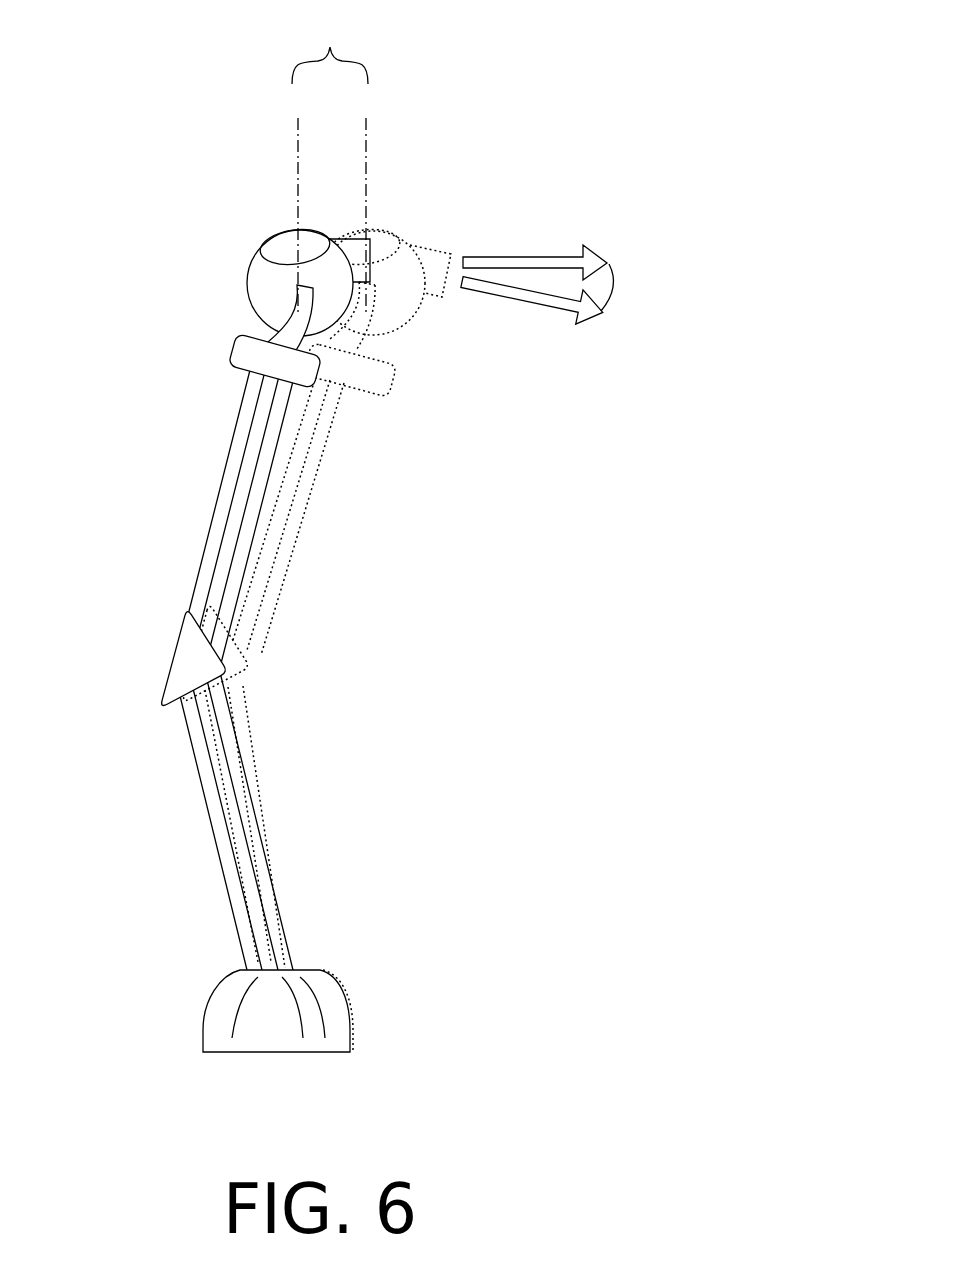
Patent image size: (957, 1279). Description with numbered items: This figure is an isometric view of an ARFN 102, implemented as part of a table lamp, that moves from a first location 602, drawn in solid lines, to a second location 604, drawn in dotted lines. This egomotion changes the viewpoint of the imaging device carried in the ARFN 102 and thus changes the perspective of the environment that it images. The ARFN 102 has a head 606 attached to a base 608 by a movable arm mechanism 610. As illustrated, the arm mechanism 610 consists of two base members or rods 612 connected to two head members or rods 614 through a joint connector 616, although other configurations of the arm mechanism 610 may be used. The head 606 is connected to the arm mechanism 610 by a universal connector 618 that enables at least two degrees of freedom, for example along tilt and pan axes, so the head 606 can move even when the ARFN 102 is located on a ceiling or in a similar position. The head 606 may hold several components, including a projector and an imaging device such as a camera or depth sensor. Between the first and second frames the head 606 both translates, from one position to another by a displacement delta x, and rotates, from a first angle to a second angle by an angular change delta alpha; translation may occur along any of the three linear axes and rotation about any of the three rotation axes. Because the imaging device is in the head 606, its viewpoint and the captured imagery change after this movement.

The ARFN 102 is at (557, 43).
The first location 602 is at (244, 216).
The second location 604 is at (444, 222).
The head 606 is at (248, 268).
The base 608 is at (360, 1020).
The arm mechanism 610 is at (146, 523).
The base members or rods 612 is at (217, 492).
The head members or rods 614 is at (205, 807).
The joint connector 616 is at (228, 673).
The universal connector 618 is at (277, 347).